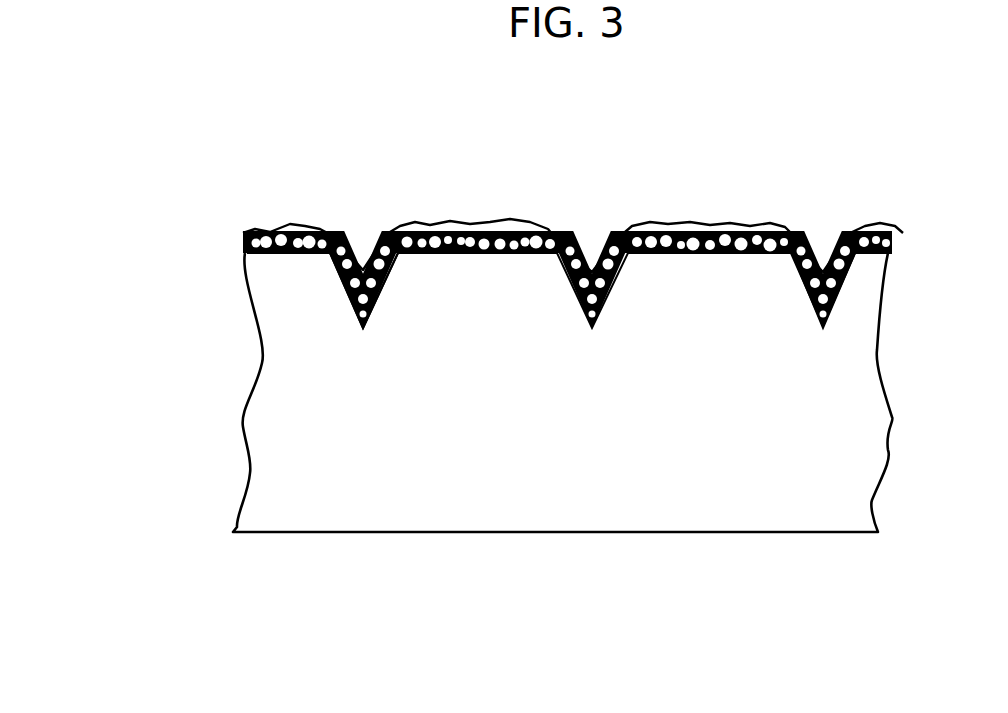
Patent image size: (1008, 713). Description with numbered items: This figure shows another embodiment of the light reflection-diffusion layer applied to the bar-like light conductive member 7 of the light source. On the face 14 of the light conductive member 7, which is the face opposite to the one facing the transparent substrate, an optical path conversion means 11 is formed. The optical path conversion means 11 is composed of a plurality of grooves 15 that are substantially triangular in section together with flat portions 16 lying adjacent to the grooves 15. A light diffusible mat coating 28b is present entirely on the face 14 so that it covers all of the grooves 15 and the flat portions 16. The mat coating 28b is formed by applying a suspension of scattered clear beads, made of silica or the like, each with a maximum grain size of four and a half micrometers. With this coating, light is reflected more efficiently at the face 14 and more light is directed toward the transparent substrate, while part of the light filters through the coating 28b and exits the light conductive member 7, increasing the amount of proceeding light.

The light conductive member 7 is at (310, 503).
The optical path conversion means 11 is at (120, 370).
The grooves 15 is at (363, 328).
The flat portions 16 is at (453, 253).
The face 14 is at (759, 233).
The light diffusible mat coating 28b is at (475, 232).